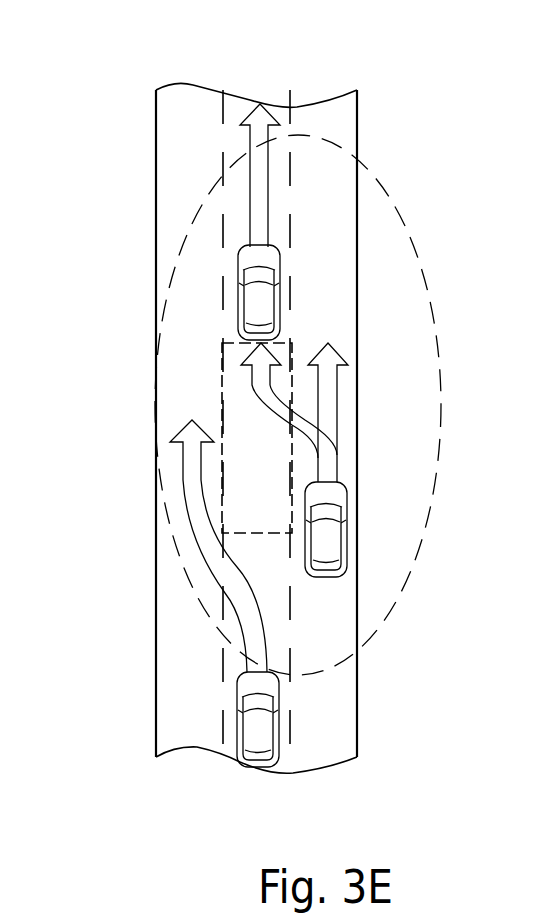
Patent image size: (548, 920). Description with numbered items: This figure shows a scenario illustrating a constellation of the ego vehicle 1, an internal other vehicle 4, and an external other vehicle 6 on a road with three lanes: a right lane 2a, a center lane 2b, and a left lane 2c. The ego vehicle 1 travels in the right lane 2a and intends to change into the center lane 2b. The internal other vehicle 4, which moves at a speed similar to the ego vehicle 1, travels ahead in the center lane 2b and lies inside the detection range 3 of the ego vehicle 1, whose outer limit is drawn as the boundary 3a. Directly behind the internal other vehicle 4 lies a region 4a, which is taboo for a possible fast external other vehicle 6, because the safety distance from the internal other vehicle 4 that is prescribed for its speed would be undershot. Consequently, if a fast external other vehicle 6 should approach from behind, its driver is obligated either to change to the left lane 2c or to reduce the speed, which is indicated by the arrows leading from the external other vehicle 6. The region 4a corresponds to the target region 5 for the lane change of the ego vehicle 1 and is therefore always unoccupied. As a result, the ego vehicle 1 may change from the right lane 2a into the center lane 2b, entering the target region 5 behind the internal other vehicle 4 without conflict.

The ego vehicle 1 is at (348, 523).
The right traffic lane 2a is at (317, 117).
The center traffic lane 2b is at (244, 107).
The left lane 2c is at (190, 107).
The detection range 3 is at (325, 379).
The boundary of detection range 3a is at (381, 190).
The internal other vehicle 4 is at (238, 285).
The region directly behind the internal other vehicle 4a is at (222, 386).
The target region 5 is at (170, 438).
The external other vehicle 6 is at (238, 700).